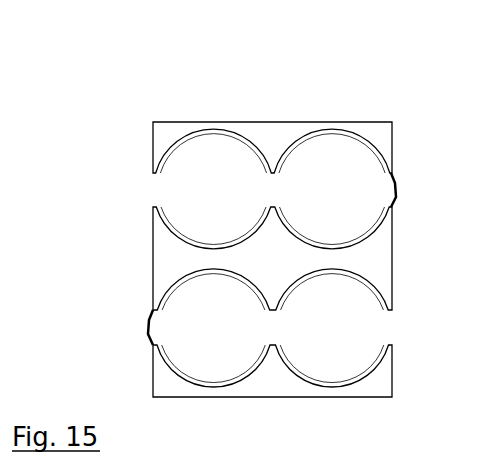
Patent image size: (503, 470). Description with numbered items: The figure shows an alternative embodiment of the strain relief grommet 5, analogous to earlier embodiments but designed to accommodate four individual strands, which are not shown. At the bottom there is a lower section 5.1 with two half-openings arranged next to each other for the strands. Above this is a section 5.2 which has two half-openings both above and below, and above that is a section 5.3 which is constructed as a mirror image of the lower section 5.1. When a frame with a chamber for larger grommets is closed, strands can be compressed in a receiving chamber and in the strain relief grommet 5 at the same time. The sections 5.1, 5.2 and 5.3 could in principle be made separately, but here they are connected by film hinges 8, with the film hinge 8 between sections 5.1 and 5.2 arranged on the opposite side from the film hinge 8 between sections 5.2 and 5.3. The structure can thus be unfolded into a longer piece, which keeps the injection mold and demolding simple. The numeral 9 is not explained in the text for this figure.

The strain relief grommet 5 is at (188, 80).
The lower section 5.1 is at (197, 395).
The middle section 5.2 is at (282, 262).
The upper section 5.3 is at (273, 140).
The film hinge 8 is at (396, 205).
The receptacle lining 9 is at (158, 196).